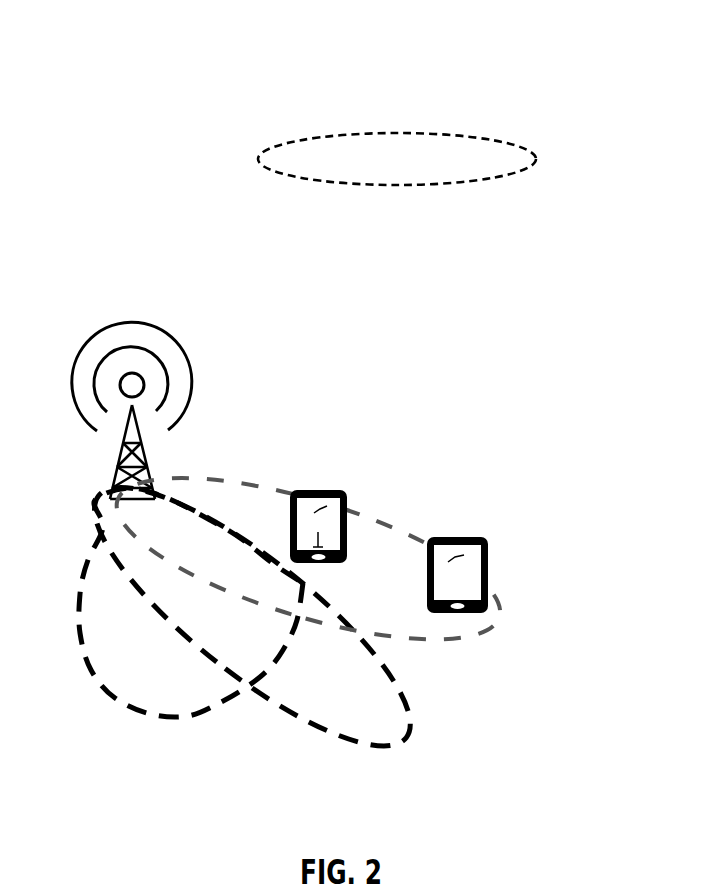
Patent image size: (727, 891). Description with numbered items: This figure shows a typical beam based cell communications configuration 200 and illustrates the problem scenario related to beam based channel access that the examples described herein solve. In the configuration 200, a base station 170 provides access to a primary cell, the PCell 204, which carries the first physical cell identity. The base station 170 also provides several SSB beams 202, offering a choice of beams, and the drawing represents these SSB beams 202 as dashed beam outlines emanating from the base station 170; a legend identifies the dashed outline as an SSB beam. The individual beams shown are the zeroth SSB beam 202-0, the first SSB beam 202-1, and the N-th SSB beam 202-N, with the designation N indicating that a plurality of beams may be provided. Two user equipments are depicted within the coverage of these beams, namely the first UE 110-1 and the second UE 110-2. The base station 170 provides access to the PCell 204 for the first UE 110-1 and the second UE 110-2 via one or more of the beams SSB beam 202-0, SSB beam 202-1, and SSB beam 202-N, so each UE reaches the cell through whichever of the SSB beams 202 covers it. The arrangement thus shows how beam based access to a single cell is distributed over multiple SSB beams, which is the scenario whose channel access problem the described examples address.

The beam based cell communications configuration 200 is at (150, 81).
The SSB beams 202 is at (421, 159).
The PCell (PCI #0) 204 is at (225, 356).
The base station 170 is at (107, 452).
The UE #1 110-1 is at (339, 491).
The UE #2 110-2 is at (454, 540).
The SSB #0 202-0 is at (175, 633).
The SSB #1 202-1 is at (360, 559).
The SSB #N 202-N is at (288, 616).